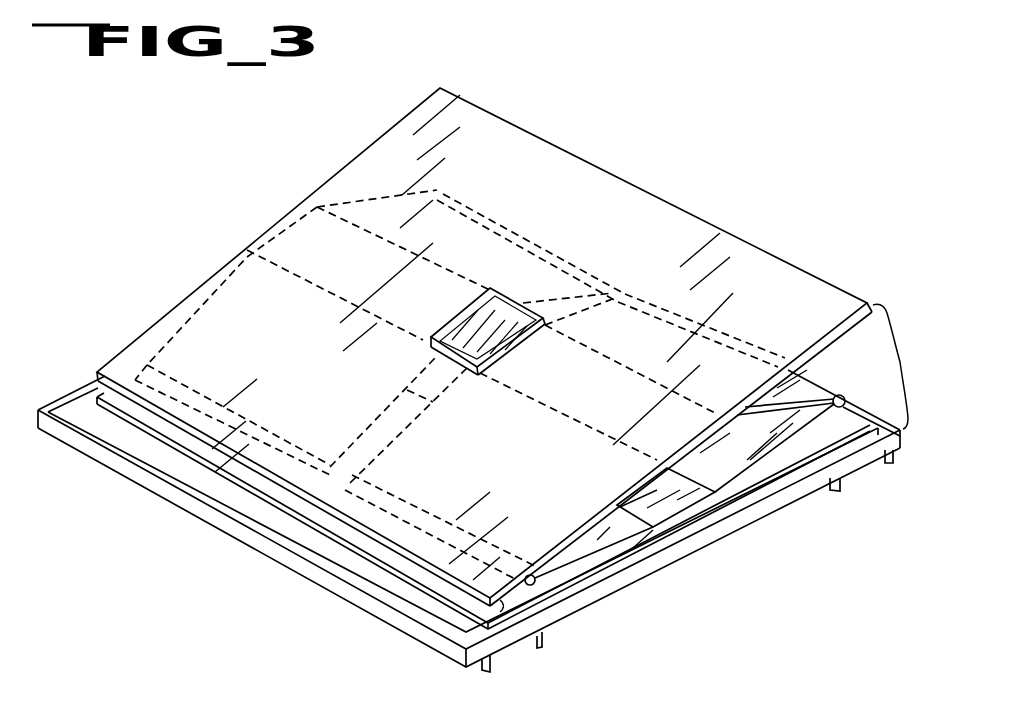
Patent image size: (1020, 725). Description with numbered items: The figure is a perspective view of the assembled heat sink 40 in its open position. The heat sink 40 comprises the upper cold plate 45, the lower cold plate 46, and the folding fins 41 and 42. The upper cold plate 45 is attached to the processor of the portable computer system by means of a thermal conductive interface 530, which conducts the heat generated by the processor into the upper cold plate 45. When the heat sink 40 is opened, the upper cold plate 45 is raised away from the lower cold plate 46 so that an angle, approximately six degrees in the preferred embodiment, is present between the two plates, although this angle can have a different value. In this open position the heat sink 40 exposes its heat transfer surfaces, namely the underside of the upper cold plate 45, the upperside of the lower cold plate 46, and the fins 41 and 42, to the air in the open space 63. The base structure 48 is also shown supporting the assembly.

The heat sink 40 is at (147, 150).
The folding fin 41 is at (590, 555).
The folding fin 42 is at (247, 255).
The upper cold plate 45 is at (521, 190).
The lower cold plate 46 is at (845, 437).
The base housing 48 is at (745, 522).
The thermal conductive interface 530 is at (510, 347).
The open space 63 is at (901, 362).